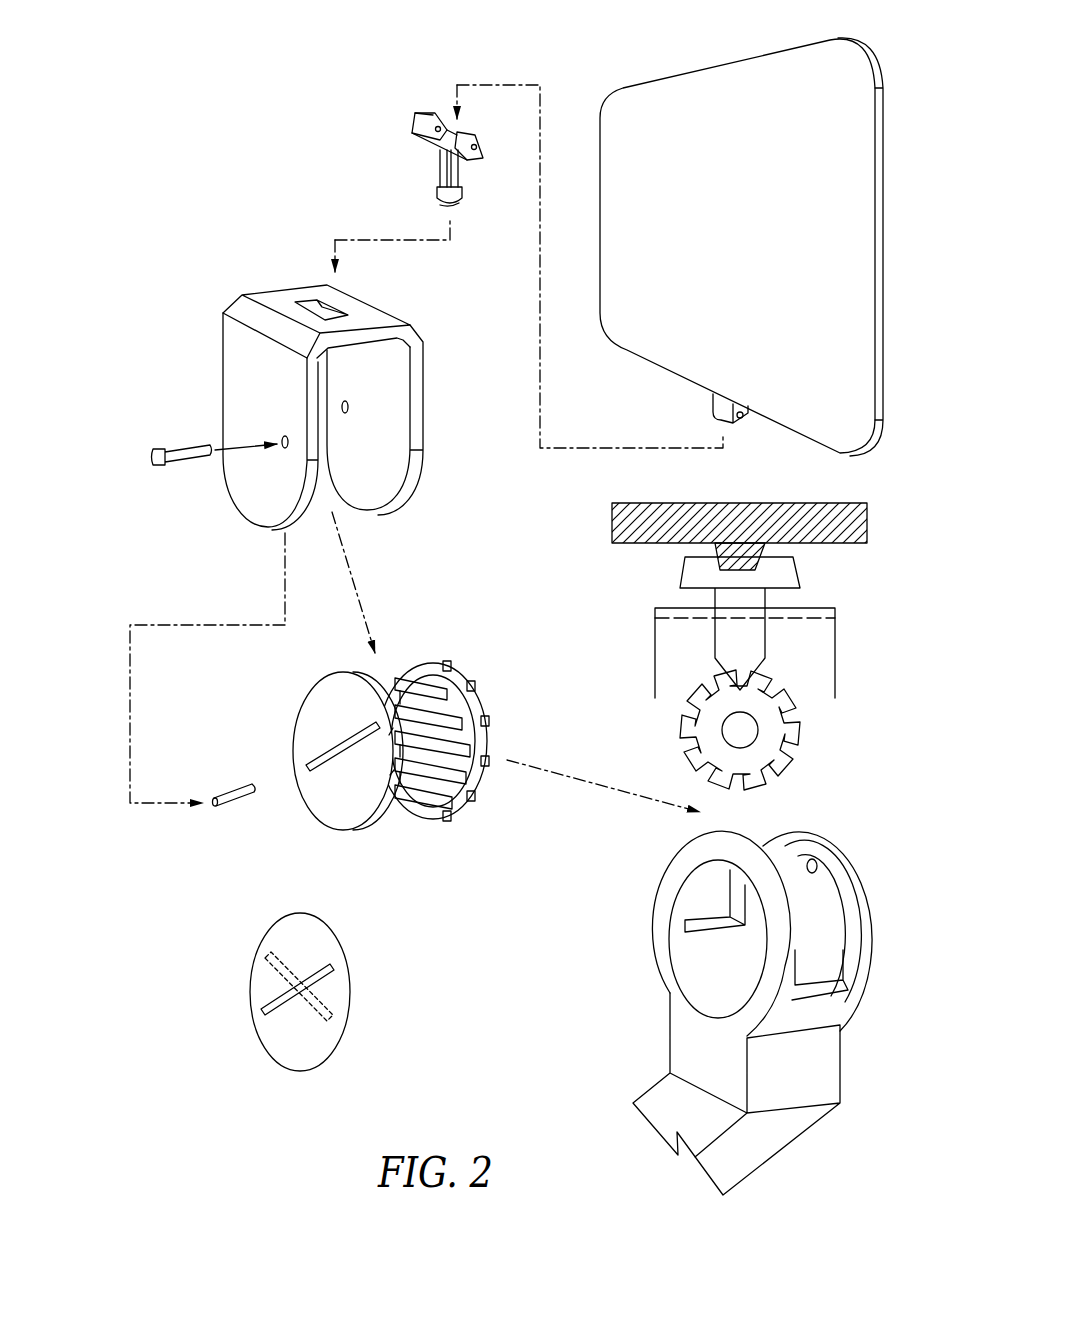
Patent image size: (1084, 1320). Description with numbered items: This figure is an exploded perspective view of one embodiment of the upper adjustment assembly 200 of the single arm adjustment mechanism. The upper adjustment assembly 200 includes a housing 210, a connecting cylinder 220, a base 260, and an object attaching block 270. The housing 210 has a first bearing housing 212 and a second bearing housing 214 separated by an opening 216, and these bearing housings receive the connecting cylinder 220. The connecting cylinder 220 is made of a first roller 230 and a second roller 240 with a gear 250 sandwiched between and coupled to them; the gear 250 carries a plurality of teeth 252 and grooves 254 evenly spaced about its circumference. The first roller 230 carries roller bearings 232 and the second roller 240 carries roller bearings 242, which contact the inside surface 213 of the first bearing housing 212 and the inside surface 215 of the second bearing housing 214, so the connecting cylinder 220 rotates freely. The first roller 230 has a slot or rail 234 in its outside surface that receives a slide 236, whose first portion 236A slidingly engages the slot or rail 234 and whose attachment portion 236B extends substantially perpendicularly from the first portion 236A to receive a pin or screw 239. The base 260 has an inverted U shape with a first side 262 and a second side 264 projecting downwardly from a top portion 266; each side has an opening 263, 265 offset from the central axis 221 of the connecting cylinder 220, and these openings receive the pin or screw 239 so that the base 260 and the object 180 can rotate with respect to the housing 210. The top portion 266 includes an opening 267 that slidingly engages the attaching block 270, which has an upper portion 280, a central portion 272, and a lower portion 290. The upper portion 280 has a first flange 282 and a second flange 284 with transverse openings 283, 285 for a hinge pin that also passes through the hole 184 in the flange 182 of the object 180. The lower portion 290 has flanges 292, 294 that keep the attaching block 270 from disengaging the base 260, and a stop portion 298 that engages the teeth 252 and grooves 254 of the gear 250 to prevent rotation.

The object 180 is at (600, 215).
The flange 182 is at (711, 403).
The hole 184 is at (743, 420).
The upper adjustment assembly 200 is at (300, 837).
The housing 210 is at (747, 993).
The first bearing housing 212 is at (788, 1015).
The inside surface 213 is at (680, 897).
The second bearing housing 214 is at (870, 943).
The inside surface 215 is at (810, 859).
The opening 216 is at (820, 895).
The connecting cylinder 220 is at (356, 765).
The central axis 221 is at (342, 762).
The first roller 230 is at (332, 680).
The roller bearings 232 is at (405, 762).
The slot or rail 234 is at (343, 745).
The slide 236 is at (233, 807).
The first portion 236A is at (213, 808).
The attachment portion 236B is at (210, 792).
The pin or screw 239 is at (158, 447).
The second roller 240 is at (460, 735).
The roller bearings 242 is at (483, 700).
The gear 250 is at (620, 705).
The teeth 252 is at (397, 680).
The grooves 254 is at (455, 743).
The base 260 is at (361, 402).
The first side 262 is at (262, 515).
The opening 263 is at (282, 437).
The second side 264 is at (397, 480).
The opening 265 is at (349, 406).
The top portion 266 is at (388, 320).
The opening 267 is at (312, 305).
The object attaching block 270 is at (440, 155).
The central portion 272 is at (440, 177).
The upper portion 280 is at (448, 118).
The first flange 282 is at (420, 113).
The opening 283 is at (418, 117).
The second flange 284 is at (458, 132).
The opening 285 is at (478, 146).
The lower portion 290 is at (586, 381).
The flange 292 is at (437, 196).
The flange 294 is at (462, 178).
The stop portion 298 is at (447, 207).